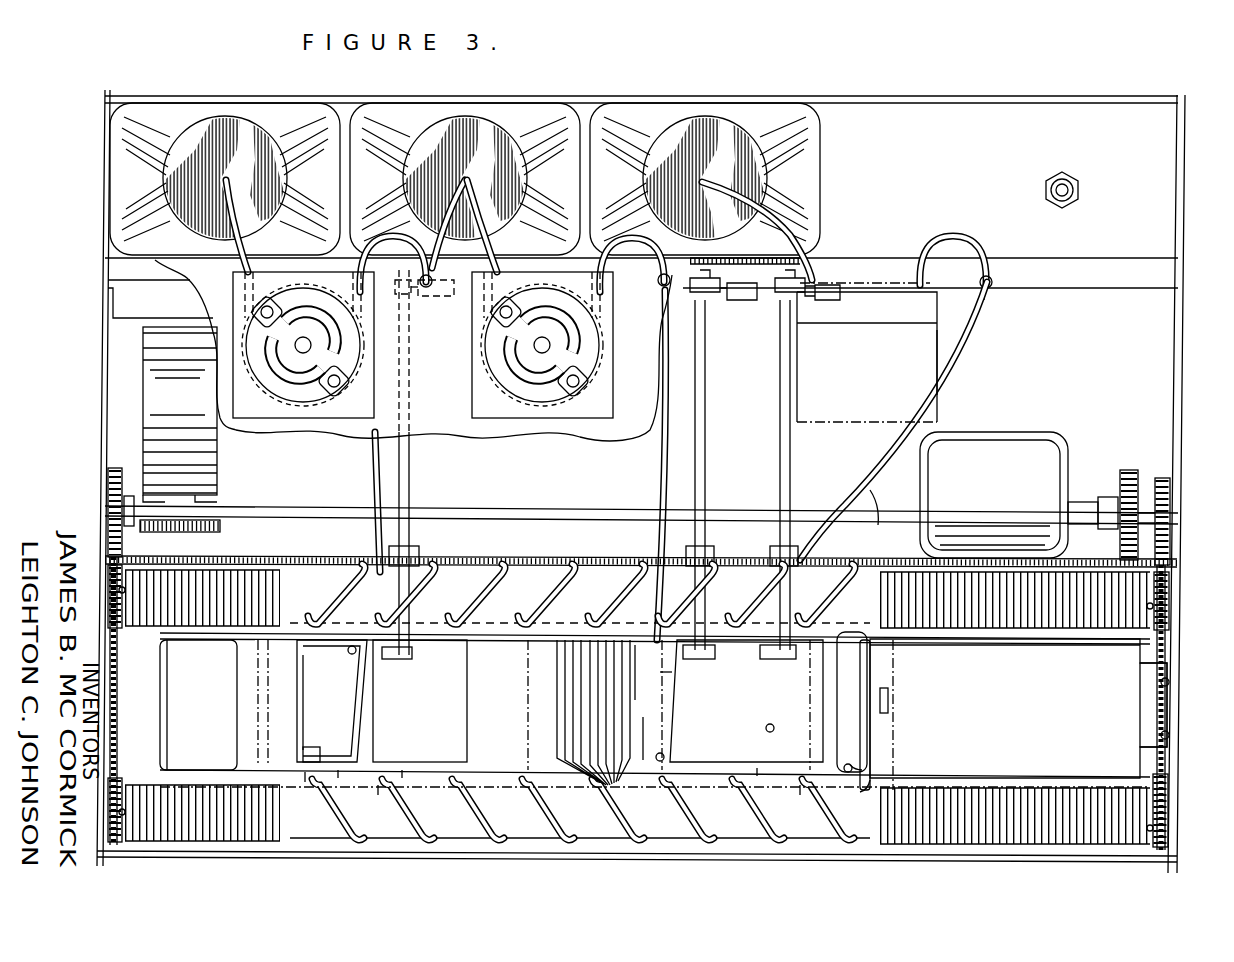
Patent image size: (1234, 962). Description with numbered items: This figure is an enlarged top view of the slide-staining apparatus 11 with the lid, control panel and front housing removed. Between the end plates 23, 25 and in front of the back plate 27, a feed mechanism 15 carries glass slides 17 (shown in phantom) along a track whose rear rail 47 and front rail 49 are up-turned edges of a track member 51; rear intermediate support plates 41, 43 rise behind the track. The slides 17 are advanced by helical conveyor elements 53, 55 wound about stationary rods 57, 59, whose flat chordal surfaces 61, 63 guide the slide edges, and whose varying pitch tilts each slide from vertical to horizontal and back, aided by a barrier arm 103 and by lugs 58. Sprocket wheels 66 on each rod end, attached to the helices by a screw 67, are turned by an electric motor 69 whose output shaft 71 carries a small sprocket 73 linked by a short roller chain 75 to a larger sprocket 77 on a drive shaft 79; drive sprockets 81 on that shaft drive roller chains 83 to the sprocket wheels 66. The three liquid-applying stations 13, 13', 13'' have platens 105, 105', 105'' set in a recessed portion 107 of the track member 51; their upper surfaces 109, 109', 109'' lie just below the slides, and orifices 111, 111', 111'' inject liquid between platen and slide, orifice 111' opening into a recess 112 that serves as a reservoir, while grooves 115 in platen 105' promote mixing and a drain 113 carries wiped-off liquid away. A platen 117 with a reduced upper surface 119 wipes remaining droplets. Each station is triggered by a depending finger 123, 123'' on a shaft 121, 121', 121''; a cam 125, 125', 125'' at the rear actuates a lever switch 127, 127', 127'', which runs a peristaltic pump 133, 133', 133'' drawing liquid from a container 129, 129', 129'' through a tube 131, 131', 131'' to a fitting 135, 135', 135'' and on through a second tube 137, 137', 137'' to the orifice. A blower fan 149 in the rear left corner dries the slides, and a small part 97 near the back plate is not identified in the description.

The slide-staining apparatus 11 is at (1085, 77).
The liquid-applying station 13 is at (771, 790).
The liquid-applying station 13' is at (425, 792).
The liquid-applying station 13'' is at (360, 793).
The feed mechanism 15 is at (1071, 646).
The glass slides 17 is at (257, 690).
The end plate 23 is at (1180, 398).
The end plate 25 is at (103, 412).
The back plate 27 is at (632, 98).
The rear intermediate support plate 41 is at (857, 323).
The rear intermediate support plate 43 is at (520, 560).
The rear rail 47 is at (867, 637).
The front rail 49 is at (867, 783).
The track member 51 is at (1130, 682).
The conveyor element 53 is at (977, 640).
The conveyor element 55 is at (980, 790).
The stationary rod 57 is at (550, 575).
The lugs 58 is at (275, 622).
The stationary rod 59 is at (650, 828).
The flat chordal surface 61 is at (378, 795).
The flat chordal surfaces 63 is at (303, 637).
The sprocket wheels 66 is at (115, 605).
The screw 67 is at (118, 586).
The electric motor 69 is at (1012, 445).
The output shaft 71 is at (1088, 499).
The small sprocket 73 is at (1112, 495).
The short roller chain 75 is at (1140, 470).
The larger sprocket 77 is at (1120, 545).
The drive shaft 79 is at (880, 510).
The drive sprockets 81 is at (108, 500).
The roller chains 83 is at (118, 665).
The nut 97 is at (1076, 181).
The barrier arm 103 is at (889, 700).
The platen 105 is at (905, 748).
The platen 105' is at (607, 678).
The platen 105'' is at (332, 701).
The recessed portion 107 is at (866, 678).
The upper surface 109 is at (746, 675).
The upper surface 109' is at (660, 644).
The upper surface 109'' is at (325, 702).
The orifice 111 is at (801, 735).
The orifice 111' is at (696, 743).
The orifice 111'' is at (371, 621).
The recess 112 is at (672, 672).
The drain 113 is at (853, 767).
The grooves 115 is at (606, 786).
The platen 117 is at (310, 772).
The upper surface 119 is at (308, 747).
The shaft 121 is at (808, 475).
The dispensing pipe 121' is at (726, 475).
The shaft 121'' is at (439, 462).
The depending finger 123 is at (745, 681).
The finger 123'' is at (426, 668).
The cam 125 is at (821, 311).
The valve 125' is at (729, 300).
The valve 125'' is at (433, 302).
The lever switch 127 is at (920, 260).
The pump switch 127' is at (688, 262).
The switch 127'' is at (425, 264).
The container 129 is at (719, 157).
The liquid container 129' is at (473, 157).
The liquid container 129'' is at (240, 157).
The flexible tube 131 is at (865, 242).
The feed tube 131' is at (505, 226).
The feed tube 131'' is at (270, 226).
The peristaltic pump 133 is at (981, 362).
The peristaltic pump 133' is at (568, 345).
The peristaltic pump 133'' is at (354, 345).
The fitting 135 is at (1020, 265).
The fitting 135' is at (744, 231).
The fitting 135'' is at (452, 224).
The second tube 137 is at (910, 421).
The fluid line 137' is at (624, 465).
The fluid line 137'' is at (339, 502).
The blower fan 149 is at (150, 380).